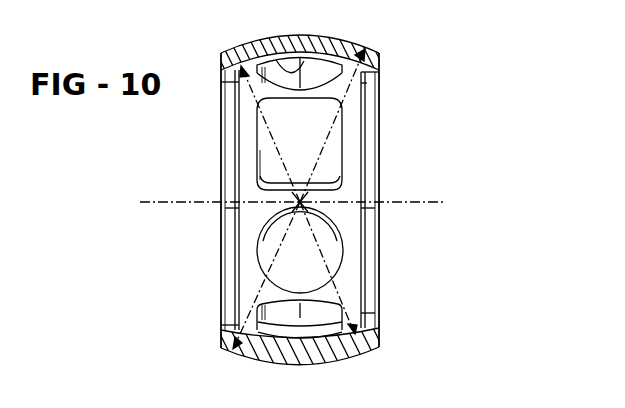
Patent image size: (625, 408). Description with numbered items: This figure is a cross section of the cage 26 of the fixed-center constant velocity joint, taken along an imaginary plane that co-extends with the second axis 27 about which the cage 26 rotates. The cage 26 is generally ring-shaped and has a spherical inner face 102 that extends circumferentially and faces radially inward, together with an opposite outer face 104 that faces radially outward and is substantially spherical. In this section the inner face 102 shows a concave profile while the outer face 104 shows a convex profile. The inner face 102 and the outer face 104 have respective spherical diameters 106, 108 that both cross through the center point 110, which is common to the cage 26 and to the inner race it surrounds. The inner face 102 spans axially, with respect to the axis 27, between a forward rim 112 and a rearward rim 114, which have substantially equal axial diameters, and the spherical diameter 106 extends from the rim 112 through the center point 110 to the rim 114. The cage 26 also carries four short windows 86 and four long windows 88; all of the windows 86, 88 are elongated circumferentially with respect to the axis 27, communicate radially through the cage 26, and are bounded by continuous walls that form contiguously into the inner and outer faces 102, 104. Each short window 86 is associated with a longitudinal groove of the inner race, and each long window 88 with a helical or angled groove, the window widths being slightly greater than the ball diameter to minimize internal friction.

The cage 26 is at (492, 88).
The second axis 27 is at (418, 201).
The short window 86 is at (342, 243).
The long window 88 is at (325, 127).
The spherical inner face 102 is at (300, 56).
The outer face 104 is at (335, 38).
The spherical diameter of the inner face 106 is at (257, 150).
The spherical diameter of the outer face 108 is at (265, 248).
The center point 110 is at (308, 190).
The forward rim 112 is at (228, 330).
The rearward rim 114 is at (365, 314).